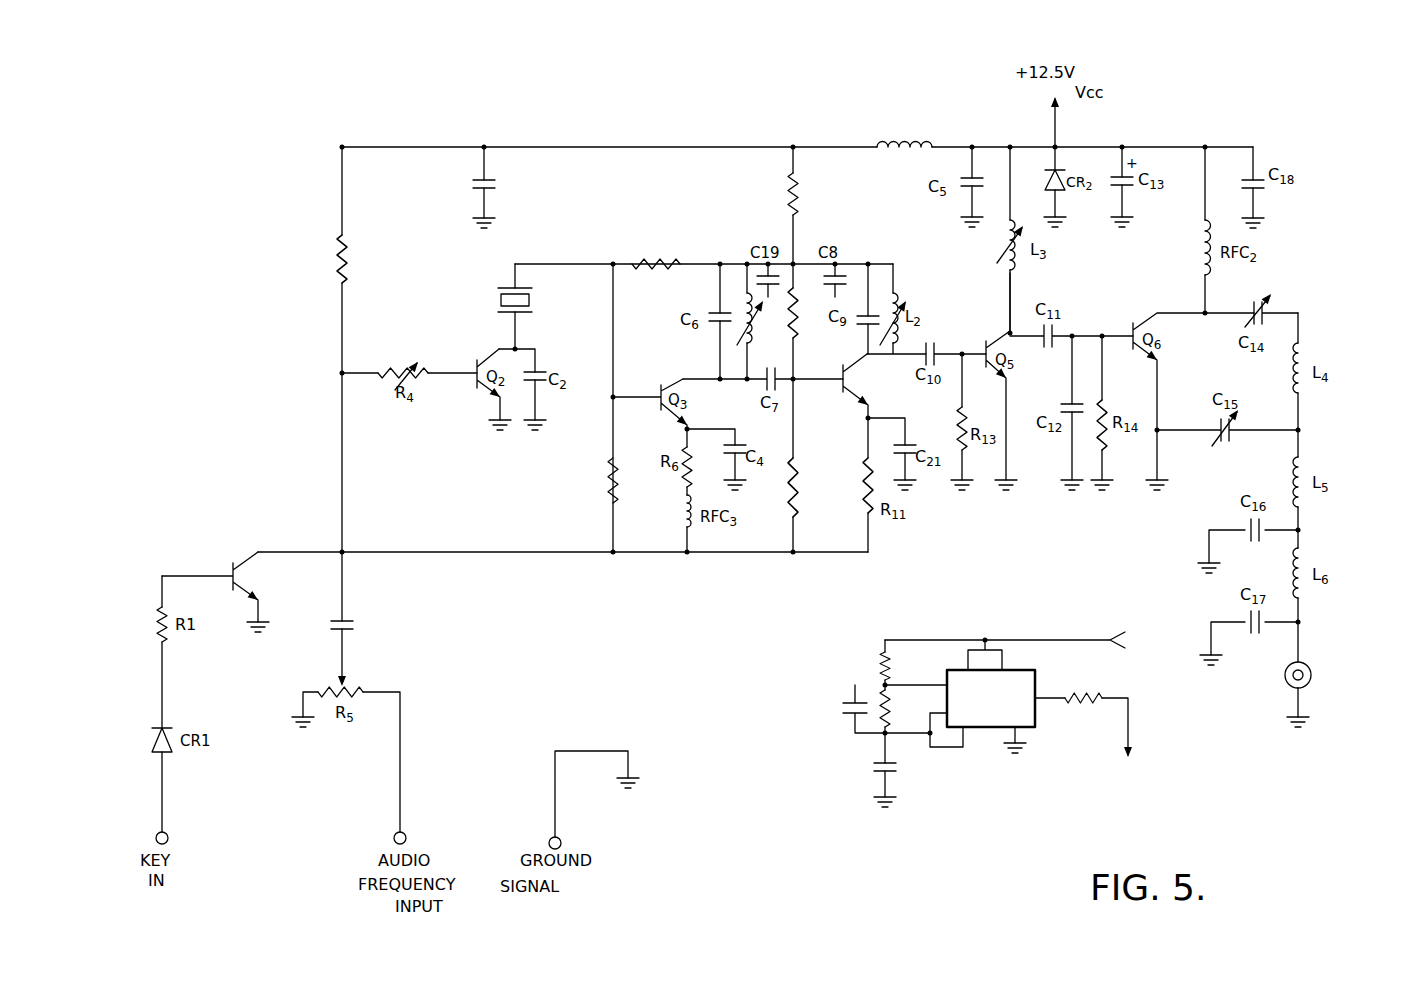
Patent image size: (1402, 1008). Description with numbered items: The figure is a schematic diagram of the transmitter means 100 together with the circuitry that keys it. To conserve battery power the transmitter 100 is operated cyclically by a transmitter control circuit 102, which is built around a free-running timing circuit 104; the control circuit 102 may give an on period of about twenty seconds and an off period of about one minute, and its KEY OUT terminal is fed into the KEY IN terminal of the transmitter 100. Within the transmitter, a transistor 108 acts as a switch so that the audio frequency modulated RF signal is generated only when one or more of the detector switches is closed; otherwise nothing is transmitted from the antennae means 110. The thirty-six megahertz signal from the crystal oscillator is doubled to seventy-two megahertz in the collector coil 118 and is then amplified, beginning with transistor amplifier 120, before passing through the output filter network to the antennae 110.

The transmitter means 100 is at (772, 106).
The transmitter control circuit 102 is at (940, 640).
The free-running timing circuit 104 is at (1048, 792).
The transistor 108 is at (246, 551).
The antennae means 110 is at (1287, 681).
The collector coil 118 is at (740, 333).
The transistor amplifier 120 is at (868, 393).